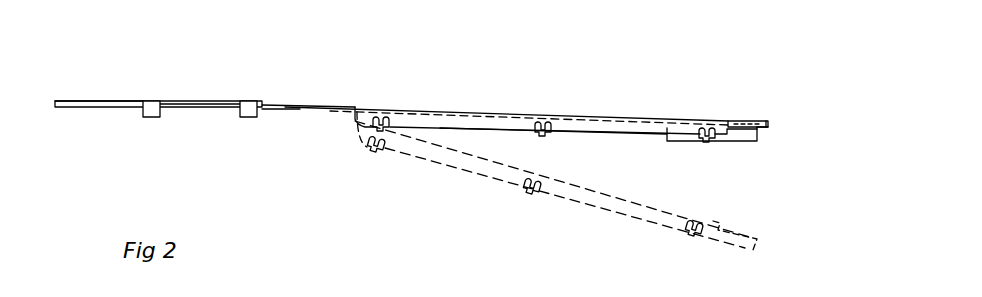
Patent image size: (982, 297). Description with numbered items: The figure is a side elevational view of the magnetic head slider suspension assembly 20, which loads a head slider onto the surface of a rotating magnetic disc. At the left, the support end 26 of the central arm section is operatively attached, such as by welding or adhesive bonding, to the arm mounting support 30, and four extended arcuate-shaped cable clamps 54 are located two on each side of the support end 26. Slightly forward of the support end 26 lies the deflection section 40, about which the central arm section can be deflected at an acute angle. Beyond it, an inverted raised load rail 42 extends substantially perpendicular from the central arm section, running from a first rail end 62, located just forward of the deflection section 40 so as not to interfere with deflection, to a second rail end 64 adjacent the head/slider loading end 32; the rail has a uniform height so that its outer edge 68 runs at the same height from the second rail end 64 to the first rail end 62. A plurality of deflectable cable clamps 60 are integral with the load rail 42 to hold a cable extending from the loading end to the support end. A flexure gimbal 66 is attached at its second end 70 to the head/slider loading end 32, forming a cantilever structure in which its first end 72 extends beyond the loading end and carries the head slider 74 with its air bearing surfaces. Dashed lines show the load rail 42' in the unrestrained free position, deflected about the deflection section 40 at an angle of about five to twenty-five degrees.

The magnetic head slider suspension assembly 20 is at (653, 99).
The support end 26 is at (199, 108).
The arm mounting support 30 is at (104, 108).
The head/slider loading end 32 is at (729, 121).
The deflection section 40 is at (289, 103).
The load rail 42 is at (521, 96).
The load rail in free position 42' is at (556, 204).
The extended arcuate-shaped cable clamps 54 is at (151, 118).
The deflectable cable clamps 60 is at (375, 150).
The first rail end 62 is at (350, 121).
The second rail end 64 is at (733, 122).
The flexure gimbal 66 is at (769, 121).
The outer edge 68 is at (623, 134).
The second end of flexure gimbal 70 is at (577, 124).
The first end of flexure gimbal 72 is at (764, 130).
The head slider 74 is at (744, 146).